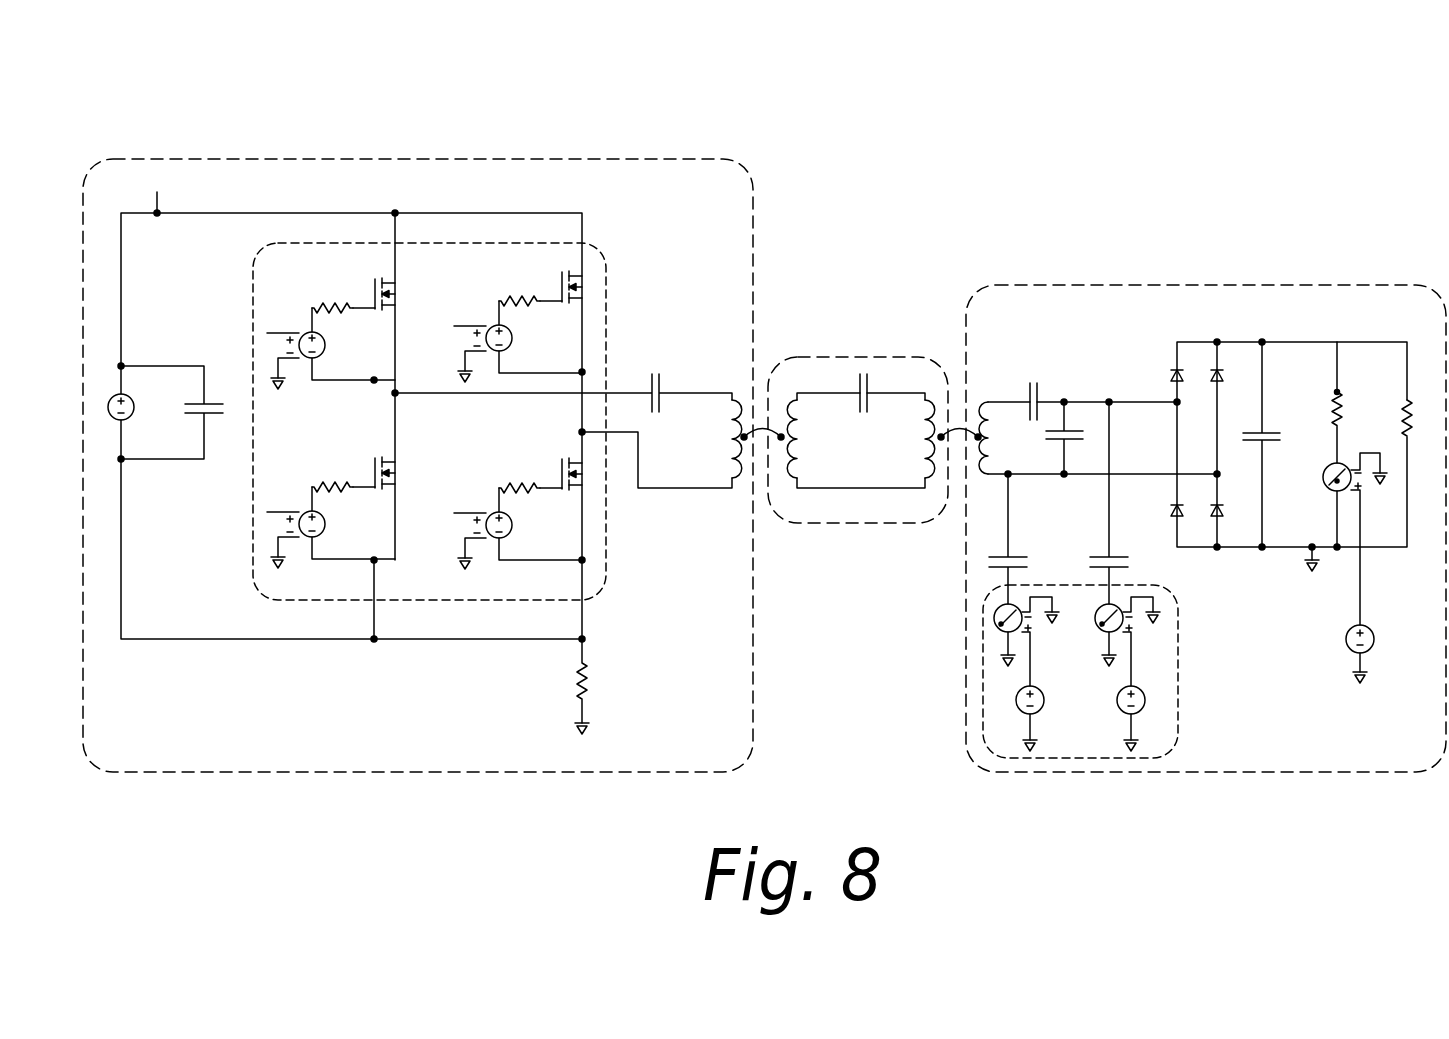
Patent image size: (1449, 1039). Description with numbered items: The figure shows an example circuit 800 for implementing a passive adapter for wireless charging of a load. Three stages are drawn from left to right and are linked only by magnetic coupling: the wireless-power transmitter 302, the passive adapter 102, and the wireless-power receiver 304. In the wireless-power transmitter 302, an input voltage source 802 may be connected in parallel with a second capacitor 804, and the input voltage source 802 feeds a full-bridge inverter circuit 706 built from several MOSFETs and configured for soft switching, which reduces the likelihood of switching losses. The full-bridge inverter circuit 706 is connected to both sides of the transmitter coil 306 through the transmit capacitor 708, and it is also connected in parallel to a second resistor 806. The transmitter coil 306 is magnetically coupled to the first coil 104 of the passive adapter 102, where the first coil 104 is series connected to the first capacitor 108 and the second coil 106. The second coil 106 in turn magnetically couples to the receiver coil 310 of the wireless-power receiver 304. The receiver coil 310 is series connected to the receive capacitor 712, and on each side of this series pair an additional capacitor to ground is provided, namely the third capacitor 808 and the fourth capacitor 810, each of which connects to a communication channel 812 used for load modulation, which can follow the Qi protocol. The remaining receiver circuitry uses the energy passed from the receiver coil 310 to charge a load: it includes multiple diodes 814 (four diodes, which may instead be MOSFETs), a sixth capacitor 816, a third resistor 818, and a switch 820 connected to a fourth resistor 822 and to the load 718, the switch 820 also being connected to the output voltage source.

The example circuit 800 is at (203, 58).
The wireless-power transmitter 302 is at (643, 159).
The full-bridge inverter circuit 706 is at (606, 286).
The capacitor Ctx 708 is at (665, 374).
The capacitor C2 804 is at (197, 404).
The voltage source Vin 802 is at (128, 418).
The resistor R2 806 is at (575, 683).
The transmitter coil Ltx 306 is at (735, 460).
The passive adapter 102 is at (885, 357).
The capacitor C1 108 is at (858, 380).
The coil L1 104 is at (800, 458).
The coil L2 106 is at (927, 462).
The wireless-power receiver 304 is at (1388, 285).
The receiver coil Lrx 310 is at (990, 476).
The capacitor Crx 712 is at (1038, 388).
The capacitor C3 808 is at (992, 570).
The capacitor C4 810 is at (1103, 553).
The communication channel 812 is at (1179, 670).
The multiple diodes 814 is at (1212, 366).
The capacitor C6 816 is at (1250, 432).
The resistor R4 822 is at (1337, 392).
The resistor R3 818 is at (1405, 400).
The switch 820 is at (1336, 491).
The load 718 is at (1350, 650).